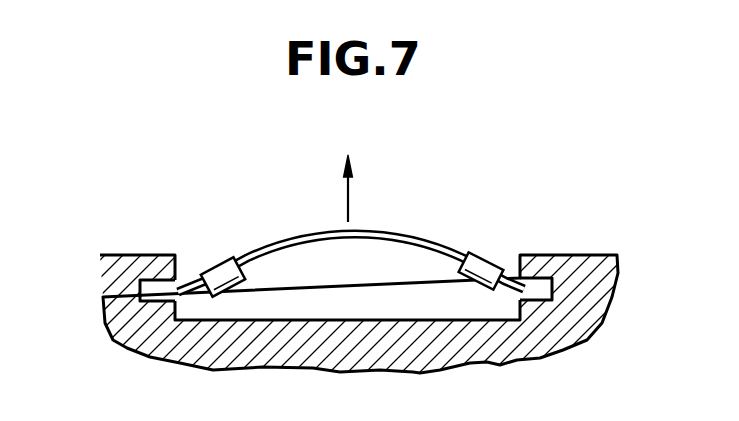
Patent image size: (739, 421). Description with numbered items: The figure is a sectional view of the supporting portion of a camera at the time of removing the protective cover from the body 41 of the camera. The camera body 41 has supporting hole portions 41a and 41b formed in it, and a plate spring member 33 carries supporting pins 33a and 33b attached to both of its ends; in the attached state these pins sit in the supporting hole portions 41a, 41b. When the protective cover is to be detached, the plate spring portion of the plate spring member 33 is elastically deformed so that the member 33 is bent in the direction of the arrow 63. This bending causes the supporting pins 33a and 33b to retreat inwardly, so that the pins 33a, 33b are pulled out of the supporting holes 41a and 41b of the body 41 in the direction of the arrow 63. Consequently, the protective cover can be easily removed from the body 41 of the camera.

The body 41 is at (598, 270).
The supporting hole portion 41a is at (151, 292).
The supporting hole portion 41b is at (536, 288).
The plate spring member 33 is at (432, 240).
The supporting pin 33a is at (188, 279).
The supporting pin 33b is at (514, 278).
The arrow 63 is at (346, 197).